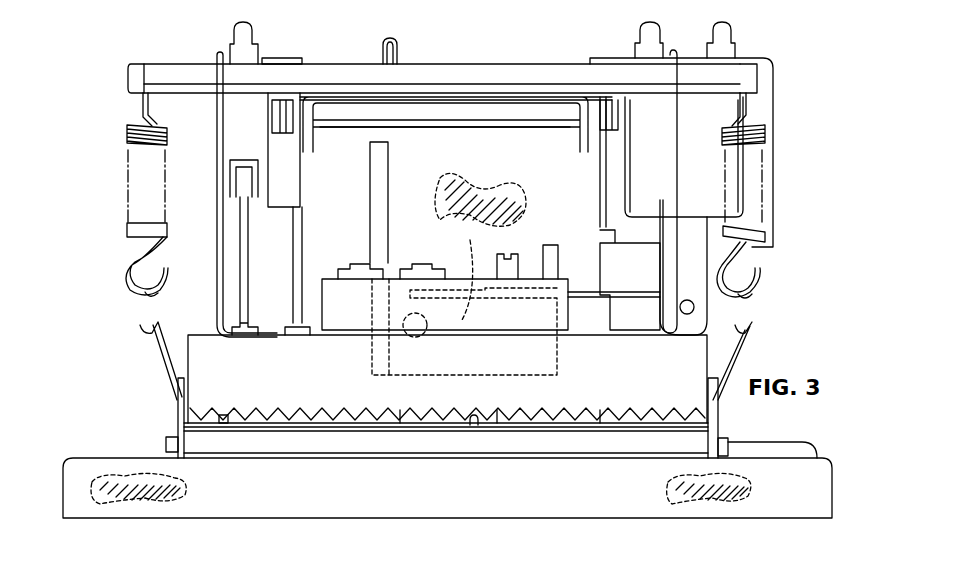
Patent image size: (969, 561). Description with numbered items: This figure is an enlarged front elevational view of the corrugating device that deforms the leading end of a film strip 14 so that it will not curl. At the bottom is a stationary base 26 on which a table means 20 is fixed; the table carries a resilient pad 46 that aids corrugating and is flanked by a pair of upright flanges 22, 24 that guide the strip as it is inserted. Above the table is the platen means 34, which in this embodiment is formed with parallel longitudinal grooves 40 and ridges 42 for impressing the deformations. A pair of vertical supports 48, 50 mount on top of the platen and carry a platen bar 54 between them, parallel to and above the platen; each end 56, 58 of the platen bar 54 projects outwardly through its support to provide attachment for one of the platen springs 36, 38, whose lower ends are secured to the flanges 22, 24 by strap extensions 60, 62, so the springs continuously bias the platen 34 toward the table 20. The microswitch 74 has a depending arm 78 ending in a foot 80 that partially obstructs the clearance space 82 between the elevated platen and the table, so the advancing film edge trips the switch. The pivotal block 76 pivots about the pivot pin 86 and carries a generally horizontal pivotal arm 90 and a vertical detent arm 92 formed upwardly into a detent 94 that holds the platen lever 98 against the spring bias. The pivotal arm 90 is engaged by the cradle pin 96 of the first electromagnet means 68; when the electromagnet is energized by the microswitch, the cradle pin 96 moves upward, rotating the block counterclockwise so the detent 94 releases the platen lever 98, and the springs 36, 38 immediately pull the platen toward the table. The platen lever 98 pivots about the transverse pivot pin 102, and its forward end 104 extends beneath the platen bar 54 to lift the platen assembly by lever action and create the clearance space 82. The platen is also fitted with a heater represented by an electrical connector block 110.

The film strip 14 is at (288, 410).
The table means 20 is at (474, 425).
The upright flange 22 is at (178, 392).
The upright flange 24 is at (735, 365).
The stationary base 26 is at (822, 483).
The platen means 34 is at (640, 383).
The platen spring 36 is at (128, 228).
The platen spring 38 is at (765, 235).
The grooves 40 is at (497, 423).
The ridges 42 is at (603, 423).
The resilient pad 46 is at (325, 422).
The vertical support 48 is at (217, 220).
The vertical support 50 is at (677, 178).
The platen bar 54 is at (455, 78).
The end of platen bar 56 is at (178, 72).
The end of platen bar 58 is at (717, 80).
The strap extension 60 is at (155, 348).
The strap extension 62 is at (745, 335).
The first electromagnet means 68 is at (762, 107).
The microswitch 74 is at (262, 60).
The pivotal block 76 is at (464, 274).
The depending arm 78 is at (248, 268).
The foot 80 is at (222, 423).
The clearance space 82 is at (400, 423).
The pivot pin 86 is at (425, 330).
The pivotal arm 90 is at (610, 330).
The detent arm 92 is at (380, 132).
The detent 94 is at (398, 60).
The cradle pin 96 is at (687, 314).
The platen lever 98 is at (555, 100).
The transverse pivot pin 102 is at (493, 125).
The forward end of platen lever 104 is at (455, 100).
The electrical connector block 110 is at (330, 290).